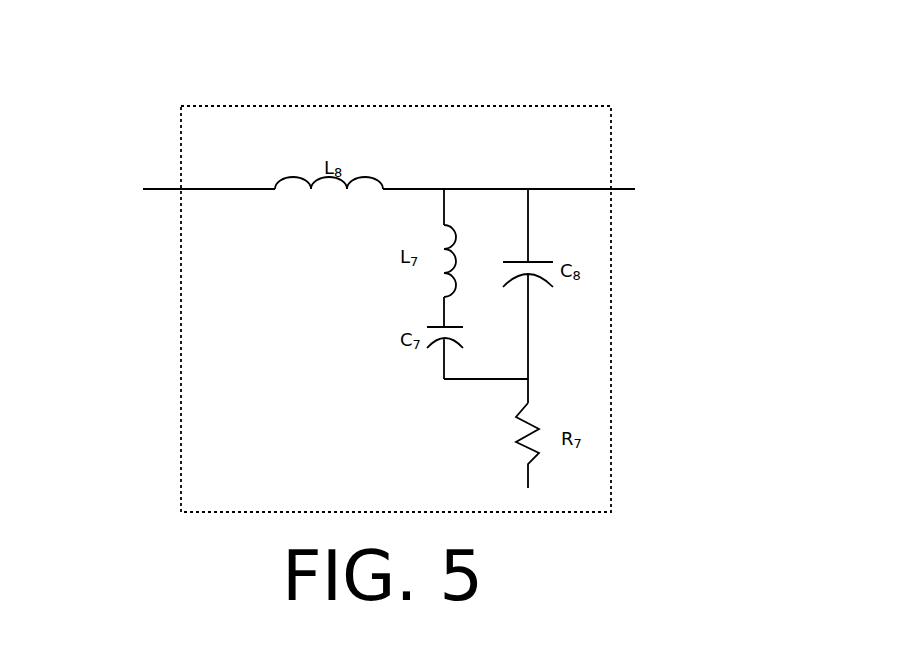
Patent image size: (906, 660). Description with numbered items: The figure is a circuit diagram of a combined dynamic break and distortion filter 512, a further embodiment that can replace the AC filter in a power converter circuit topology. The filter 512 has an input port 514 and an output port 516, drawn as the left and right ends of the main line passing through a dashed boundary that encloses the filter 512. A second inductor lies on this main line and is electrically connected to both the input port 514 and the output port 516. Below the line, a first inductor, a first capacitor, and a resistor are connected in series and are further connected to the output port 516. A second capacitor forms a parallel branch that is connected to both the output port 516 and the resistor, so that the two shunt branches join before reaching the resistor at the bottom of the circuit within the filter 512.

The combined dynamic break and distortion filter 512 is at (611, 123).
The input port 514 is at (192, 187).
The output port 516 is at (590, 189).